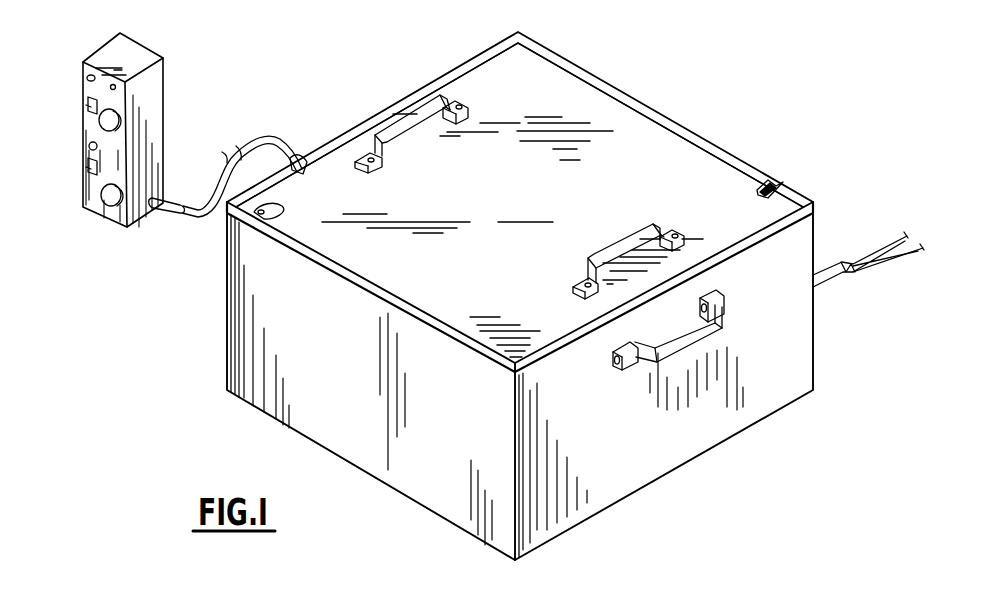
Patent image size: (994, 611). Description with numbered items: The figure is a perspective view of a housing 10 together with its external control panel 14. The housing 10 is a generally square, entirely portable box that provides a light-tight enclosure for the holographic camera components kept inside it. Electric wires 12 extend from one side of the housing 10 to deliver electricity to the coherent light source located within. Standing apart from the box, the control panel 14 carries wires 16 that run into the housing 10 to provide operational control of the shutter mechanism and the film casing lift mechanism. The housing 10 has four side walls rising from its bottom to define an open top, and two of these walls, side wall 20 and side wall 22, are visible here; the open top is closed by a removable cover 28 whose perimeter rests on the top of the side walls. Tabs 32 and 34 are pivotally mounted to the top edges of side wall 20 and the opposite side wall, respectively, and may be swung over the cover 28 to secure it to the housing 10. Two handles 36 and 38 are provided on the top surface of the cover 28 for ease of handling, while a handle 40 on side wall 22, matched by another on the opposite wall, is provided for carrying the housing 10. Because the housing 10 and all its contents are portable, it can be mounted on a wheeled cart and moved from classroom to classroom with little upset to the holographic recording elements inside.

The housing 10 is at (661, 74).
The electric wires 12 is at (838, 265).
The control panel 14 is at (136, 70).
The wires 16 is at (260, 133).
The side wall 20 is at (341, 391).
The side wall 22 is at (619, 448).
The removable cover 28 is at (526, 268).
The tab 32 is at (277, 207).
The tab 34 is at (766, 188).
The handle 36 is at (413, 110).
The handle 38 is at (623, 243).
The handle 40 is at (660, 350).